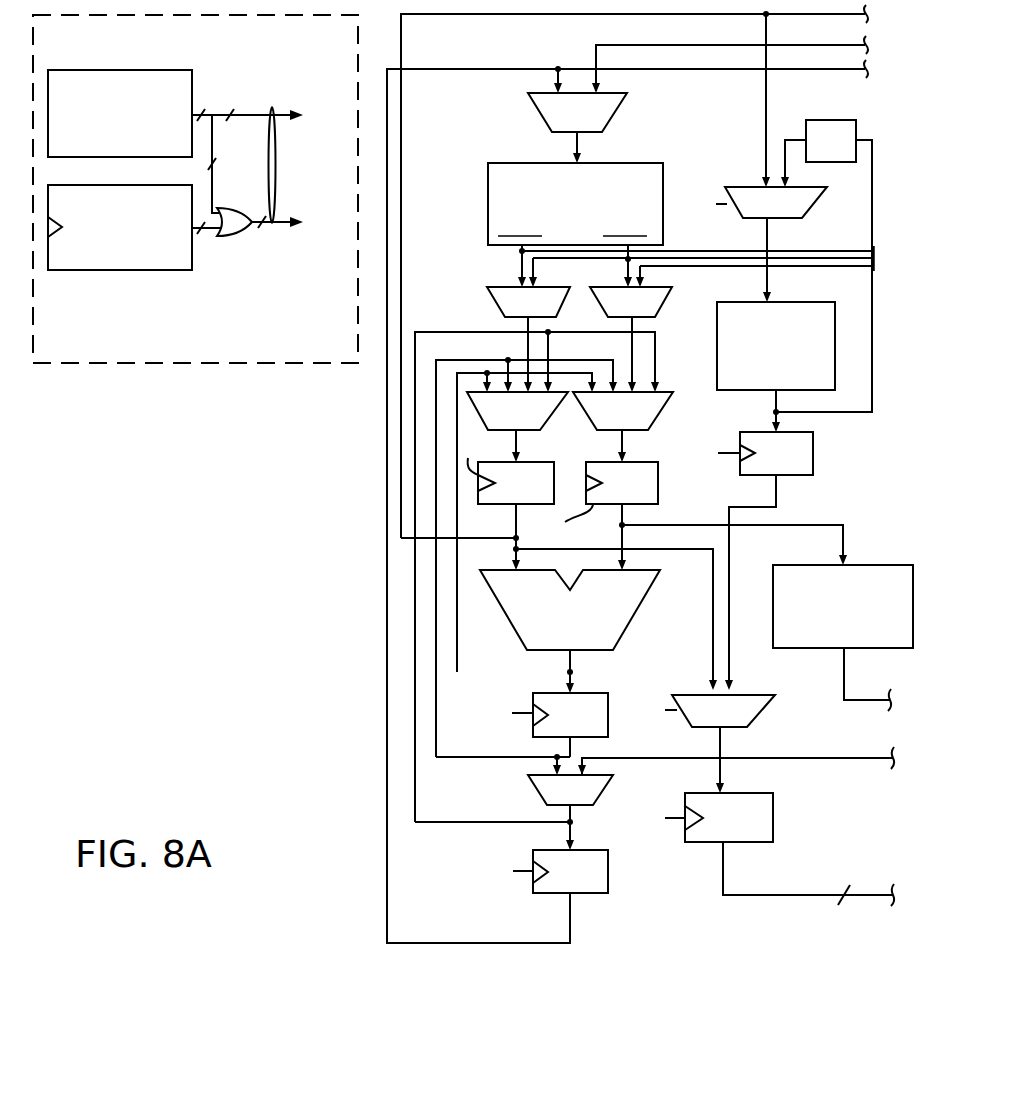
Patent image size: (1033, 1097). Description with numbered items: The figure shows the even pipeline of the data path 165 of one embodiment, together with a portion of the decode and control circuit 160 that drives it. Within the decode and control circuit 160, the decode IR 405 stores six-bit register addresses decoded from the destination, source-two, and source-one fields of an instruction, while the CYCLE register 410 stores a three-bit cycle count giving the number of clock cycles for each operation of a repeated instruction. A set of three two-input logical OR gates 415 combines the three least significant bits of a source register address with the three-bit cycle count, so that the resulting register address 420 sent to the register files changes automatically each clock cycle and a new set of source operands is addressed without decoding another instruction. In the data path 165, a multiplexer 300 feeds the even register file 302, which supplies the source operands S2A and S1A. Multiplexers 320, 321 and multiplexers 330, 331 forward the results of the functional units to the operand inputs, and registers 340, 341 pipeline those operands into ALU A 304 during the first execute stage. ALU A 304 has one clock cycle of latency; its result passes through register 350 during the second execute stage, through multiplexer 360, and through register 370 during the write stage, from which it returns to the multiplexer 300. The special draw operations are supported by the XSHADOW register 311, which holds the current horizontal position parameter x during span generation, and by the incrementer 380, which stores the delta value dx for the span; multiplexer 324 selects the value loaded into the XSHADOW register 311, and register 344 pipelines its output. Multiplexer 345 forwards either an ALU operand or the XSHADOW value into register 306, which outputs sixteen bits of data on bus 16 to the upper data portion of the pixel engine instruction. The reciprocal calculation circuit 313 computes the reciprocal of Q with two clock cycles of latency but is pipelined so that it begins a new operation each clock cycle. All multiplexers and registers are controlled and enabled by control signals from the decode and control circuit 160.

The decode and control circuit 160 is at (152, 353).
The decode instruction register 405 is at (171, 151).
The CYCLE register 410 is at (179, 263).
The logical OR gates 415 is at (262, 256).
The register address 420 is at (272, 108).
The data path 165 is at (208, 550).
The multiplexer 300 is at (613, 116).
The even register file 302 is at (663, 174).
The incrementer 380 is at (818, 120).
The multiplexer 324 is at (837, 210).
The multiplexer 320 is at (580, 285).
The multiplexer 321 is at (662, 296).
The XSHADOW register 311 is at (824, 377).
The multiplexer 330 is at (558, 390).
The multiplexer 331 is at (665, 402).
The register 340 is at (520, 462).
The register 341 is at (640, 462).
The register 344 is at (813, 460).
The ALU A 304 is at (549, 643).
The reciprocal calculation circuit 313 is at (900, 640).
The register 350 is at (580, 693).
The multiplexer 345 is at (752, 718).
The multiplexer 360 is at (602, 793).
The register 306 is at (732, 842).
The register 370 is at (608, 868).
The bus 16 is at (808, 874).